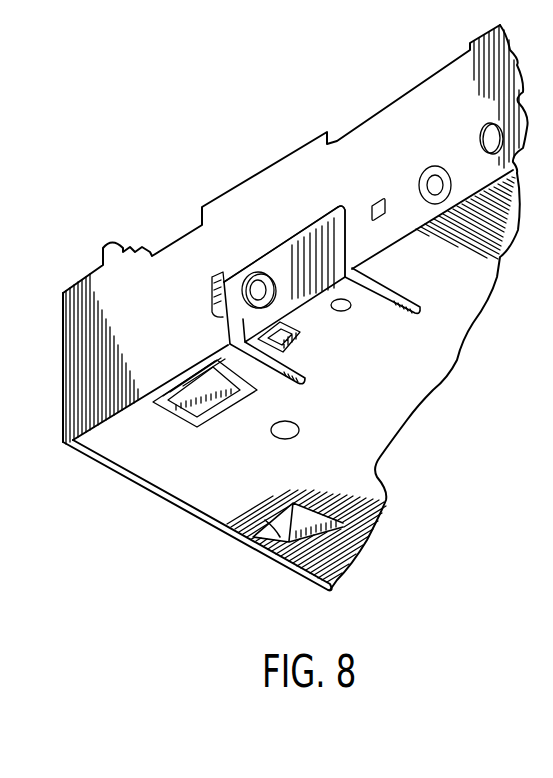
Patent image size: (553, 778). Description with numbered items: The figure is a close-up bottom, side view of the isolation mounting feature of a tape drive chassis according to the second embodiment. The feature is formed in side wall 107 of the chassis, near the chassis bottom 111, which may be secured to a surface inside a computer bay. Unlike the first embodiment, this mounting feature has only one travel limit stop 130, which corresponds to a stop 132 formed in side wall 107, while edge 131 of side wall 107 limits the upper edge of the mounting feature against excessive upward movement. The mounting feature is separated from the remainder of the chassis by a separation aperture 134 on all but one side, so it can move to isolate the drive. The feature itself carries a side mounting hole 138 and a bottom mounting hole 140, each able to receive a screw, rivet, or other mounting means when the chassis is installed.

The side wall 107 is at (417, 103).
The bottom 111 is at (405, 412).
The travel limit stop 130 is at (274, 302).
The edge 131 is at (278, 241).
The stop 132 is at (220, 319).
The separation aperture 134 is at (303, 382).
The side mounting hole 138 is at (319, 215).
The bottom mounting hole 140 is at (345, 305).